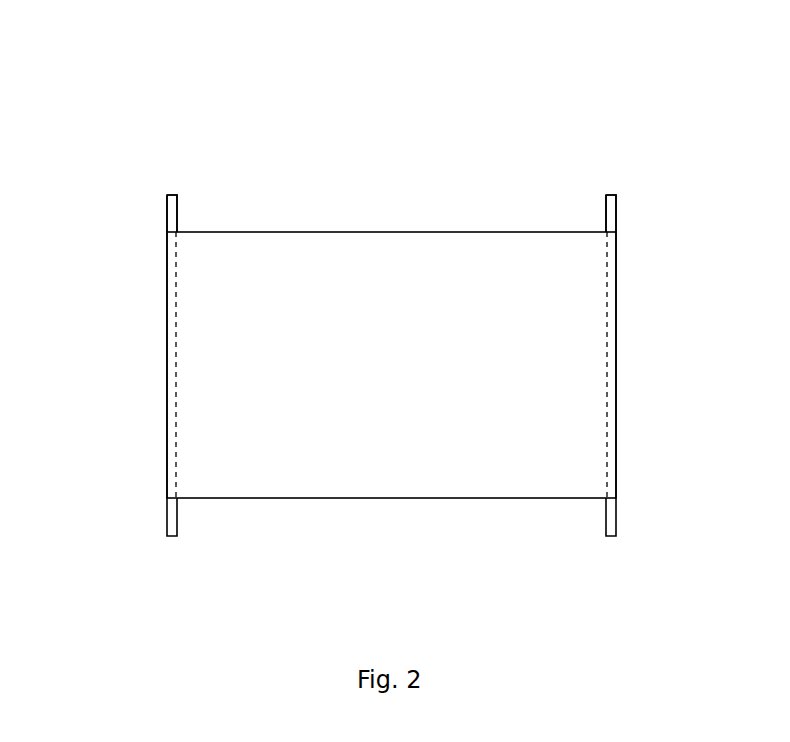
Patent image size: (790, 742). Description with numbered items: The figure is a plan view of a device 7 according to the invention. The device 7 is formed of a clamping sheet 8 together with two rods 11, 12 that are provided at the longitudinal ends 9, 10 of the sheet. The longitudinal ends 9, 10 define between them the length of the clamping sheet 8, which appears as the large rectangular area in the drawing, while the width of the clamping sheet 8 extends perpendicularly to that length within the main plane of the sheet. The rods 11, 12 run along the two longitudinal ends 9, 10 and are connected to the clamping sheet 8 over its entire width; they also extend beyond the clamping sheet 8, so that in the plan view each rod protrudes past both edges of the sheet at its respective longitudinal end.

The device 7 is at (390, 297).
The clamping sheet 8 is at (380, 458).
The longitudinal end 9 is at (679, 358).
The longitudinal end 10 is at (102, 348).
The rod 11 is at (616, 208).
The rod 12 is at (166, 212).